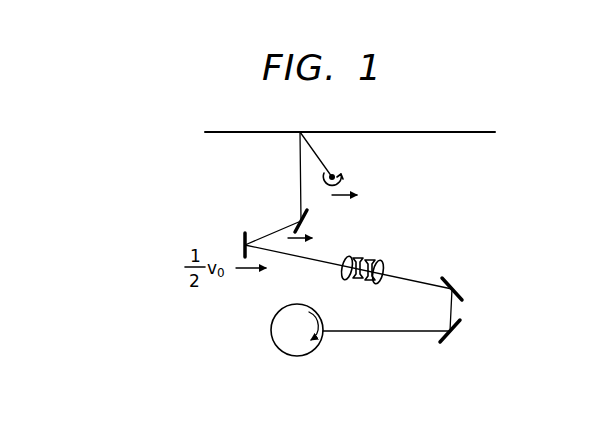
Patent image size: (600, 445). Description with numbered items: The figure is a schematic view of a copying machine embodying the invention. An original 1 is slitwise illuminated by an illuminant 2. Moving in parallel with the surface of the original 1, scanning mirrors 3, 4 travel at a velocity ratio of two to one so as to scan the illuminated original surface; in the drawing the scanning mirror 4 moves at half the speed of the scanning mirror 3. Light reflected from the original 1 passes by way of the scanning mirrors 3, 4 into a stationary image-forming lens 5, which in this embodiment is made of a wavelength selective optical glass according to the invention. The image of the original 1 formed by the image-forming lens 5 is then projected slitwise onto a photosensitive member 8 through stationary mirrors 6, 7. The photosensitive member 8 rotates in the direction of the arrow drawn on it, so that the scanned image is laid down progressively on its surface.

The original 1 is at (470, 132).
The illuminant 2 is at (345, 179).
The scanning mirror 3 is at (308, 215).
The scanning mirror 4 is at (242, 238).
The image-forming lens 5 is at (393, 254).
The stationary mirror 6 is at (452, 282).
The stationary mirror 7 is at (450, 338).
The photosensitive member 8 is at (271, 336).